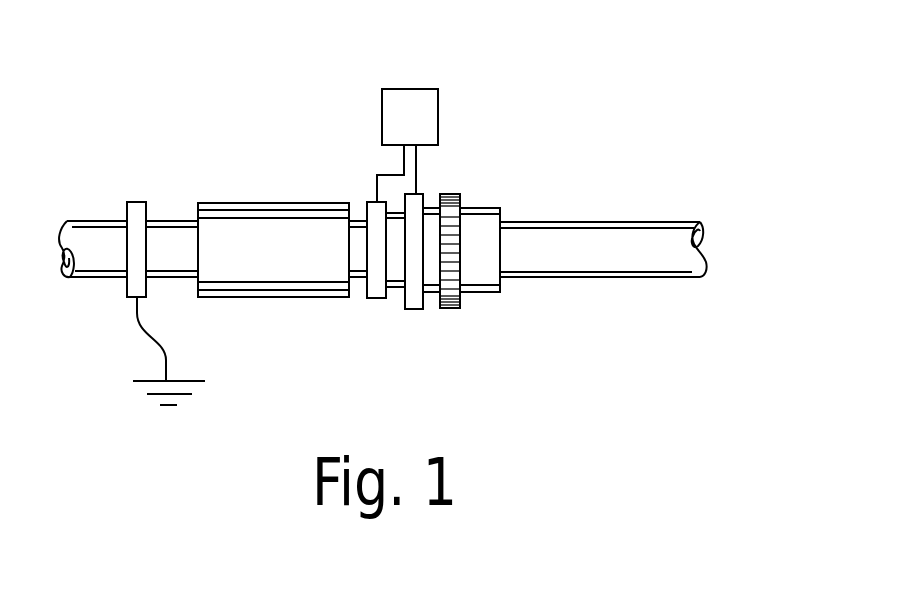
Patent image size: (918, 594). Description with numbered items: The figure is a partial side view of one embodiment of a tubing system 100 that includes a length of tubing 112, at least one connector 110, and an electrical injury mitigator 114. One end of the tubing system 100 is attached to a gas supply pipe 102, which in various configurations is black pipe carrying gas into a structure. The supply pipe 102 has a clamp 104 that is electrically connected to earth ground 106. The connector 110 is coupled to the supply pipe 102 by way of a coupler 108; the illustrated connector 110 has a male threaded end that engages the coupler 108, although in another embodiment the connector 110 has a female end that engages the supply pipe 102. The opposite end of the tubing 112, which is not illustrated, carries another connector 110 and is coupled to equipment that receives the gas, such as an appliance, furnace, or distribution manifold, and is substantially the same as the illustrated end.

The tubing system 100 is at (704, 96).
The supply pipe 102 is at (85, 221).
The clamp 104 is at (138, 202).
The earth ground 106 is at (167, 362).
The coupler 108 is at (290, 202).
The connector 110 is at (502, 307).
The tubing 112 is at (635, 278).
The electrical injury mitigator 114 is at (438, 122).